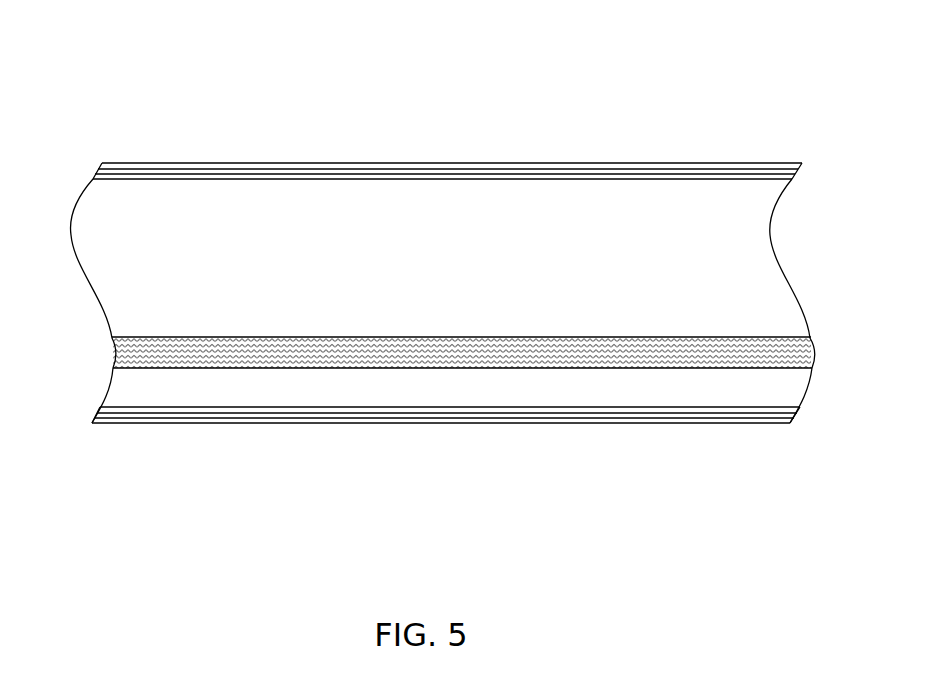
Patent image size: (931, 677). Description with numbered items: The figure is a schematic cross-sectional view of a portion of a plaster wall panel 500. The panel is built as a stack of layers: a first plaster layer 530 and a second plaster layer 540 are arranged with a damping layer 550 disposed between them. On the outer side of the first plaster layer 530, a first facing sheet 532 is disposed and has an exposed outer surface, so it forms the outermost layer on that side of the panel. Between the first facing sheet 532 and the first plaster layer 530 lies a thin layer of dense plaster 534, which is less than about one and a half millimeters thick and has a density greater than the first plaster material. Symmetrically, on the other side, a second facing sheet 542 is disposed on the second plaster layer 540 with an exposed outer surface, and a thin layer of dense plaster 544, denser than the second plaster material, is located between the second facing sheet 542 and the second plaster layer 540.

The plaster wall panel 500 is at (153, 115).
The second plaster layer 540 is at (565, 189).
The second facing sheet 542 is at (397, 163).
The thin layer of dense plaster 544 is at (320, 178).
The damping layer 550 is at (284, 368).
The first plaster layer 530 is at (647, 393).
The thin layer of dense plaster 534 is at (353, 407).
The first facing sheet 532 is at (427, 418).